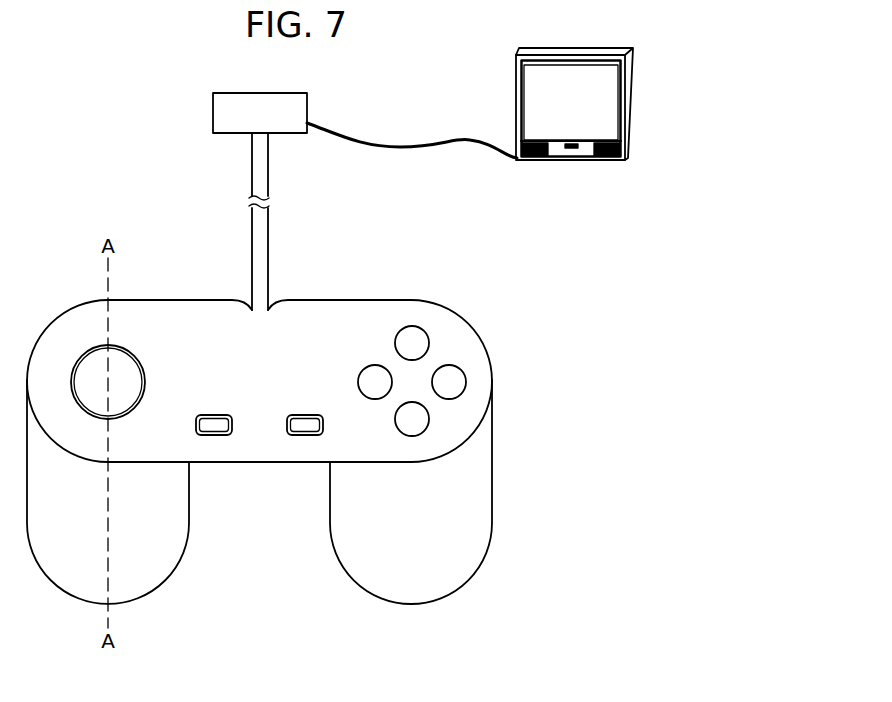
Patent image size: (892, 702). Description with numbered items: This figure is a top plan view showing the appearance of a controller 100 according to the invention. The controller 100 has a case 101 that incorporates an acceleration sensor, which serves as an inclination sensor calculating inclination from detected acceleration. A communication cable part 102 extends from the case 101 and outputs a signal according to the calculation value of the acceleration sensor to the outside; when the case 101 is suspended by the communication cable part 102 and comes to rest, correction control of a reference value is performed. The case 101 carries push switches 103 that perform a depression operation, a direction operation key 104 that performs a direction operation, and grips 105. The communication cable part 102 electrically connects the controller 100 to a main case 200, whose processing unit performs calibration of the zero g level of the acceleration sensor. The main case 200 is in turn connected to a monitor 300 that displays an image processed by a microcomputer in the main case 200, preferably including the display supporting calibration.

The controller 100 is at (582, 330).
The case 101 is at (319, 311).
The communication cable part 102 is at (268, 230).
The push switches 103 is at (418, 405).
The direction operation key 104 is at (93, 362).
The grips 105 is at (367, 555).
The main case 200 is at (260, 113).
The monitor 300 is at (636, 117).